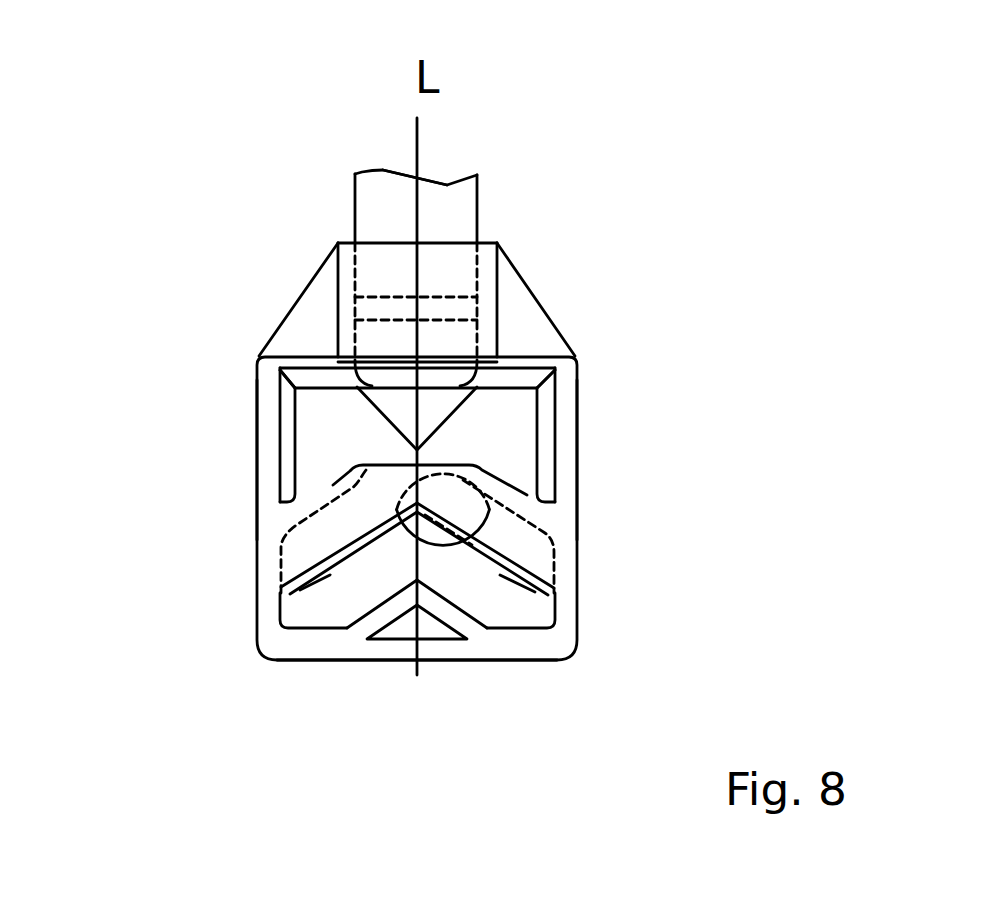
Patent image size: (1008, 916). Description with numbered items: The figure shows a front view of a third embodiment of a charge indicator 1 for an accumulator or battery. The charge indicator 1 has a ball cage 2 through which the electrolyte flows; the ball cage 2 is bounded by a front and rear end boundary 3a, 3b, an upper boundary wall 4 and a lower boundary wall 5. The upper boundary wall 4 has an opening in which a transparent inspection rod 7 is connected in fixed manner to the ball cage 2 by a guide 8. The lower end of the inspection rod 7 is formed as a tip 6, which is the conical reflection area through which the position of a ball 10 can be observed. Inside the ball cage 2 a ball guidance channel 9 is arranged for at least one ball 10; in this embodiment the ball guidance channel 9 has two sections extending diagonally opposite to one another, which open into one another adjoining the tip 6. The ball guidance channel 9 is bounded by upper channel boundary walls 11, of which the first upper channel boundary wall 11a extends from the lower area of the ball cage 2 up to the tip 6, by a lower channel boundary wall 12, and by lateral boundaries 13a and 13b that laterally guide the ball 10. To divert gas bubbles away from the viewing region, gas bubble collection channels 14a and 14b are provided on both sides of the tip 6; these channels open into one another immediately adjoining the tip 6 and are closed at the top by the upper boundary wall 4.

The charge indicator 1 is at (153, 217).
The ball cage 2 is at (630, 350).
The front end boundary 3a is at (577, 457).
The rear end boundary 3b is at (255, 540).
The upper boundary wall 4 is at (295, 355).
The lower boundary wall 5 is at (462, 660).
The tip 6 is at (420, 424).
The inspection rod 7 is at (437, 202).
The guide 8 is at (347, 282).
The ball guidance channel 9 is at (330, 618).
The ball 10 is at (433, 560).
The bore 11 is at (417, 228).
The first upper channel boundary wall 11a is at (333, 490).
The lower channel boundary wall 12 is at (402, 605).
The lateral boundary 13a is at (340, 520).
The lateral boundary 13b is at (318, 588).
The gas bubble collection channel 14a is at (327, 425).
The gas bubble collection channel 14b is at (513, 405).